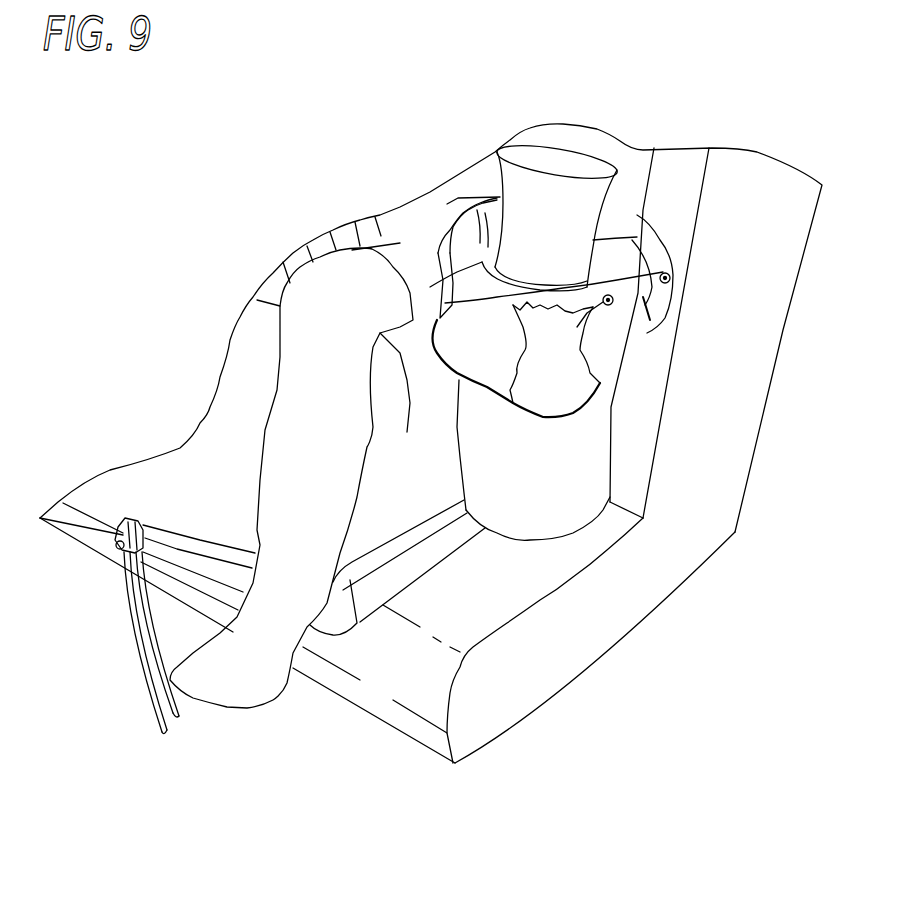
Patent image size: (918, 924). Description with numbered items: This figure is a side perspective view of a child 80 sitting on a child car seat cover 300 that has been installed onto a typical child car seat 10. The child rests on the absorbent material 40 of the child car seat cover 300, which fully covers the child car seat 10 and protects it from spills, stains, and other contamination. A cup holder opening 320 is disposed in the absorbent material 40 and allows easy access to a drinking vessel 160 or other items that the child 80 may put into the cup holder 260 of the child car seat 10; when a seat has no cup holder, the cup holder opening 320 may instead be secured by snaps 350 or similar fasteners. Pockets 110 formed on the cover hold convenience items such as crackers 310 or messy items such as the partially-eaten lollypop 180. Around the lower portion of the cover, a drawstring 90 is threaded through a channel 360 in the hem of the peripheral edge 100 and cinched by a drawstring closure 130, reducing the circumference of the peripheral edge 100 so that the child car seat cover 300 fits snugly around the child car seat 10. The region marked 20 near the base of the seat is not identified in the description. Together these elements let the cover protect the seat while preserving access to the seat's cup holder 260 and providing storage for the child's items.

The child car seat 10 is at (383, 590).
The base side wall 20 is at (503, 680).
The absorbent material 40 is at (634, 157).
The child 80 is at (323, 472).
The drawstring 90 is at (130, 620).
The peripheral edge 100 is at (177, 550).
The pockets 110 is at (577, 440).
The drawstring closure 130 is at (127, 535).
The drinking vessel 160 is at (570, 223).
The partially-eaten lollypop 180 is at (645, 317).
The cup holder 260 is at (488, 263).
The child car seat cover 300 is at (190, 410).
The crackers 310 is at (557, 347).
The cup holder opening 320 is at (453, 304).
The snaps 350 is at (612, 295).
The channel 360 is at (200, 540).